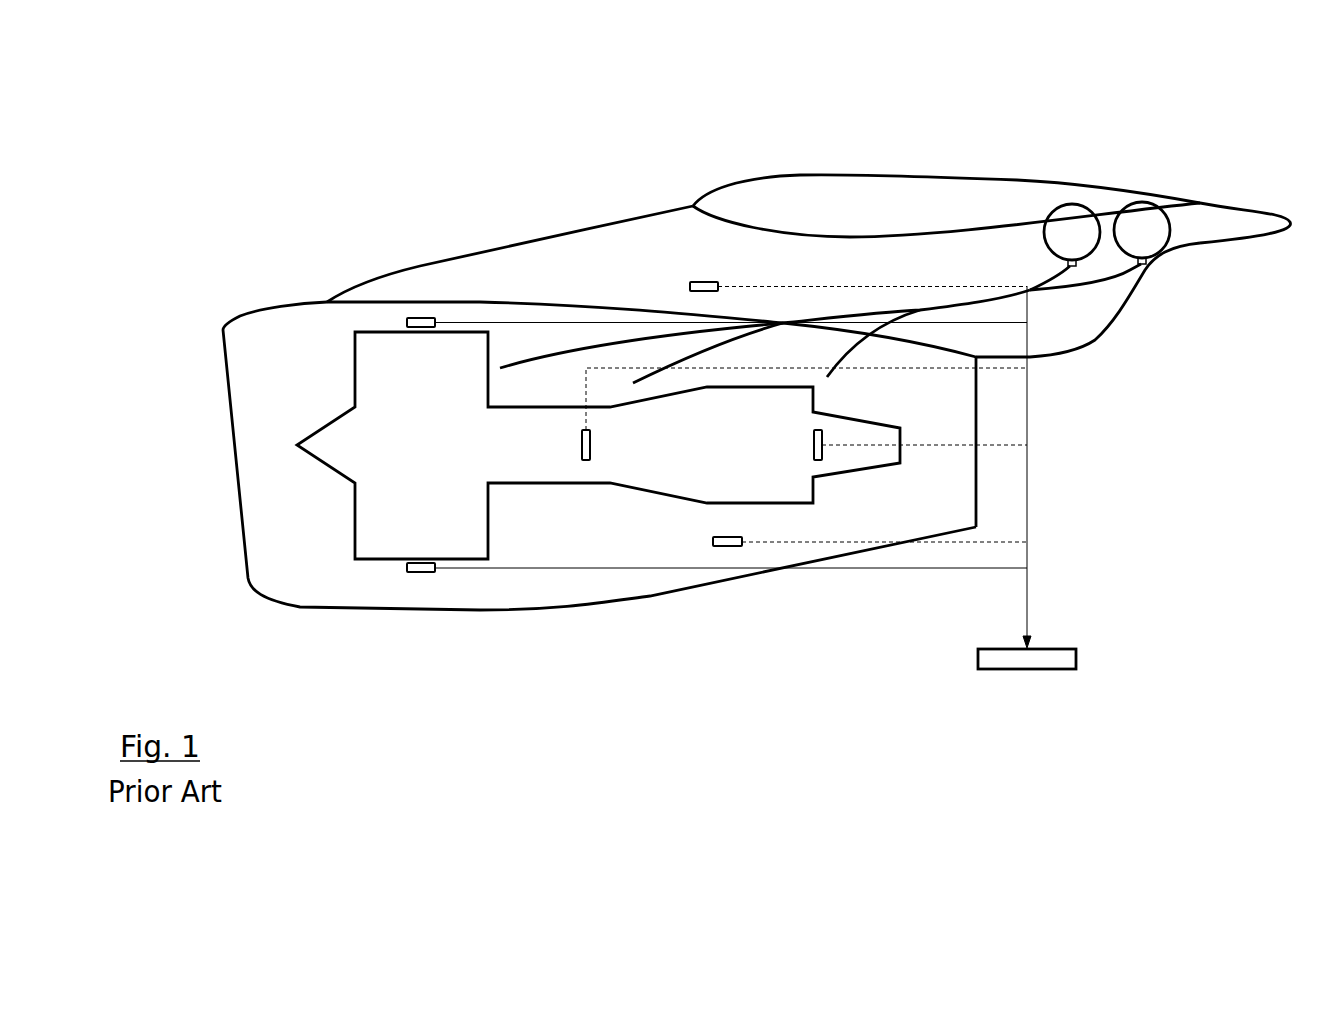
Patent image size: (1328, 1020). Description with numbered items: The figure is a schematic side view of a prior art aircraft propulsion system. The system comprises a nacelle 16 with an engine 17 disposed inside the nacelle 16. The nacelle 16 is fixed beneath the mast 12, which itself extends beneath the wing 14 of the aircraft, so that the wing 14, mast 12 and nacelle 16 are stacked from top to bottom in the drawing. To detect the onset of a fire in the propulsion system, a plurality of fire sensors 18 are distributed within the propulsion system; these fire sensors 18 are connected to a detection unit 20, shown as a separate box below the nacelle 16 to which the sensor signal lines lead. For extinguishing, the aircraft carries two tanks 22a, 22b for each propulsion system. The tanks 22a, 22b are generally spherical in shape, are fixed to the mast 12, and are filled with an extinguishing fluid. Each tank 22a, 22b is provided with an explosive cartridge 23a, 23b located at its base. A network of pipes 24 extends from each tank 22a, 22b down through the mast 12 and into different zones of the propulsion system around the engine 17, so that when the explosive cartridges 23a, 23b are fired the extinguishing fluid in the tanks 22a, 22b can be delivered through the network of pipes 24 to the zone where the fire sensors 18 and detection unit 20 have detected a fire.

The mast 12 is at (577, 265).
The wing 14 is at (838, 197).
The nacelle 16 is at (260, 330).
The engine 17 is at (345, 463).
The fire sensors 18 is at (407, 322).
The detection unit 20 is at (1022, 662).
The tank 22a is at (1068, 237).
The tank 22b is at (1148, 225).
The explosive cartridge 23a is at (1076, 266).
The explosive cartridge 23b is at (1146, 264).
The network of pipes 24 is at (1070, 293).